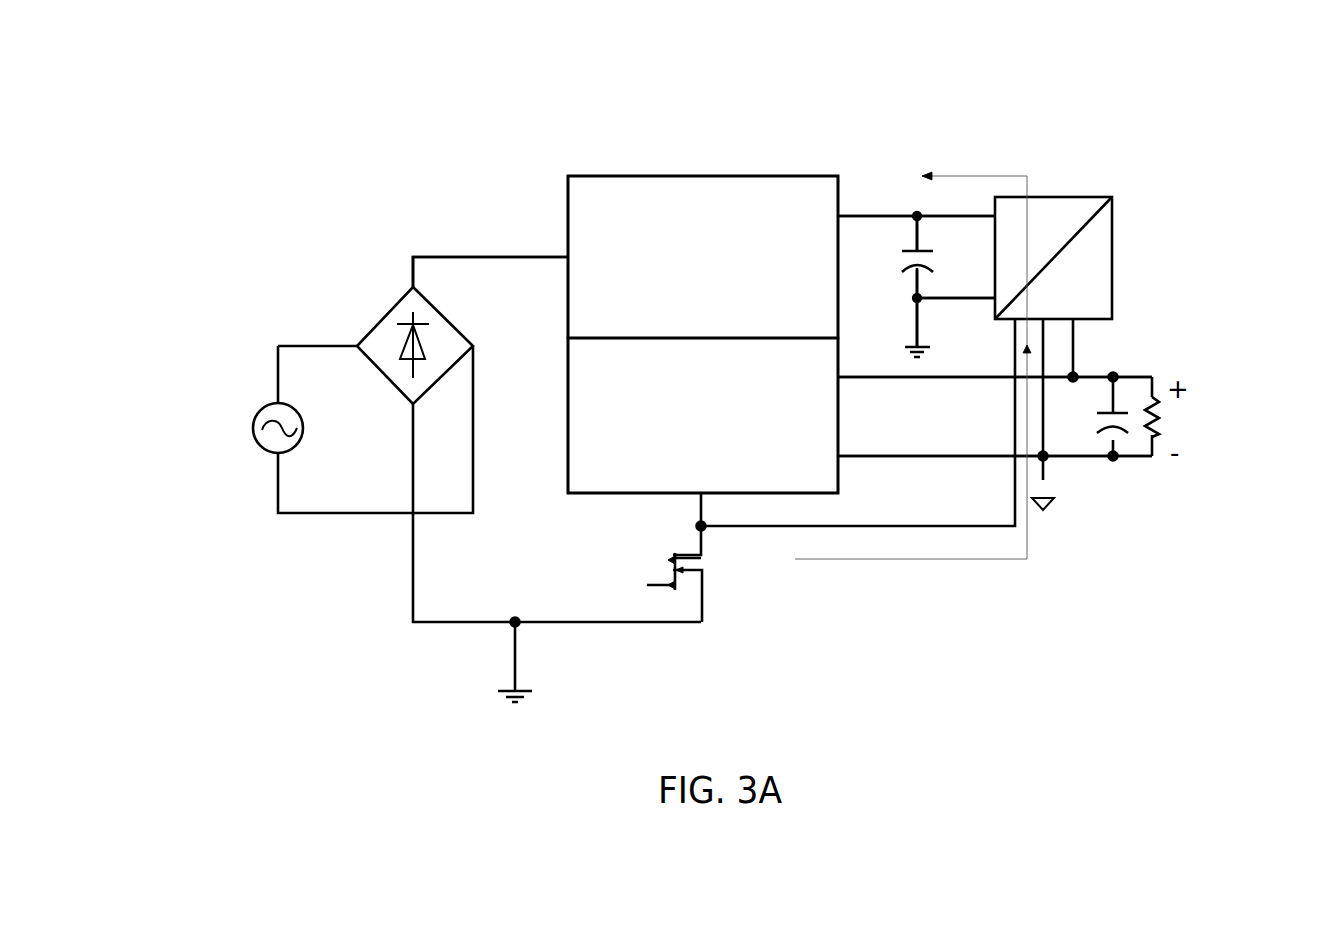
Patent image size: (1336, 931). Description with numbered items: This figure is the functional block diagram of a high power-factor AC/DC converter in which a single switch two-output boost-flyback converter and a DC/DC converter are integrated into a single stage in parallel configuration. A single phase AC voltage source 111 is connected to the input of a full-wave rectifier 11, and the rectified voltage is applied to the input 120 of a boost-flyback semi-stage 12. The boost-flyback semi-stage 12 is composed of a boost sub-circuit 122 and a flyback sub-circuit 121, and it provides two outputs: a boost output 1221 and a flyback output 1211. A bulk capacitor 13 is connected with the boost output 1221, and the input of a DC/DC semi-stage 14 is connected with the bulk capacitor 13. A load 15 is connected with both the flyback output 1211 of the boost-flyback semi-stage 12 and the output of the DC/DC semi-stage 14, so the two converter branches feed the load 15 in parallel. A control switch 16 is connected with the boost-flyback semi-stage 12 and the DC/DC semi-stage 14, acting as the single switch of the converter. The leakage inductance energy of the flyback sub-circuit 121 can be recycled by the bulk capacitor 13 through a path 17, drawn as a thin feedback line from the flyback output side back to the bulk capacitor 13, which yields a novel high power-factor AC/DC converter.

The full-wave rectifier 11 is at (383, 312).
The single phase AC voltage source 111 is at (253, 437).
The boost-flyback semi-stage 12 is at (637, 373).
The input 120 is at (553, 257).
The flyback sub-circuit 121 is at (605, 482).
The boost sub-circuit 122 is at (590, 213).
The flyback output 1211 is at (868, 378).
The boost output 1221 is at (862, 215).
The bulk capacitor 13 is at (903, 235).
The DC/DC semi-stage 14 is at (1065, 197).
The load 15 is at (1158, 418).
The control switch 16 is at (662, 587).
The path 17 is at (913, 384).